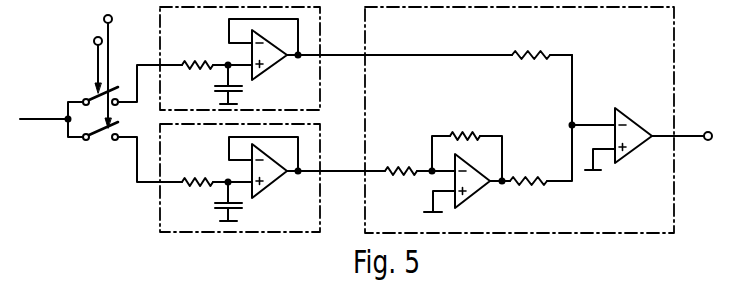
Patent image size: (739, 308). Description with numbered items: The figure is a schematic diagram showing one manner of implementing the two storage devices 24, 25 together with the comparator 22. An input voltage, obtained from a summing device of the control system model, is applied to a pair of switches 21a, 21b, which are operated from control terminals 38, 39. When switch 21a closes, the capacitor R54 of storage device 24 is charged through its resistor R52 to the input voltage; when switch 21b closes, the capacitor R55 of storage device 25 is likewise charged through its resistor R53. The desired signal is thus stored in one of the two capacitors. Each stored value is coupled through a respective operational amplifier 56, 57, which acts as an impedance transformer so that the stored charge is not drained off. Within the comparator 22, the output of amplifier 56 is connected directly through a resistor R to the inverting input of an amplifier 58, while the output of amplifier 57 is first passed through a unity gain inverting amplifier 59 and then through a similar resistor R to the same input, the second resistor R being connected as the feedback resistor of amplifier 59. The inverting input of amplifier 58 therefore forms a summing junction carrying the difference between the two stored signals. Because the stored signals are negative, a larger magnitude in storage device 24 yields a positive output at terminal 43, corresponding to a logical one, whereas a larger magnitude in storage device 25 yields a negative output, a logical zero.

The switch 21a is at (89, 95).
The switch 21b is at (94, 141).
The comparator 22 is at (674, 22).
The storage device 24 is at (320, 22).
The storage device 25 is at (320, 214).
The control input terminal 38 is at (87, 61).
The control input terminal 39 is at (118, 68).
The output terminal 43 is at (693, 137).
The operational amplifier 56 is at (268, 70).
The operational amplifier 57 is at (265, 190).
The amplifier 58 is at (621, 111).
The unity gain inverting amplifier 59 is at (468, 198).
The resistor R52 is at (204, 58).
The resistor R53 is at (206, 173).
The capacitor R54 is at (214, 90).
The capacitor R55 is at (214, 207).
The resistor R is at (469, 131).